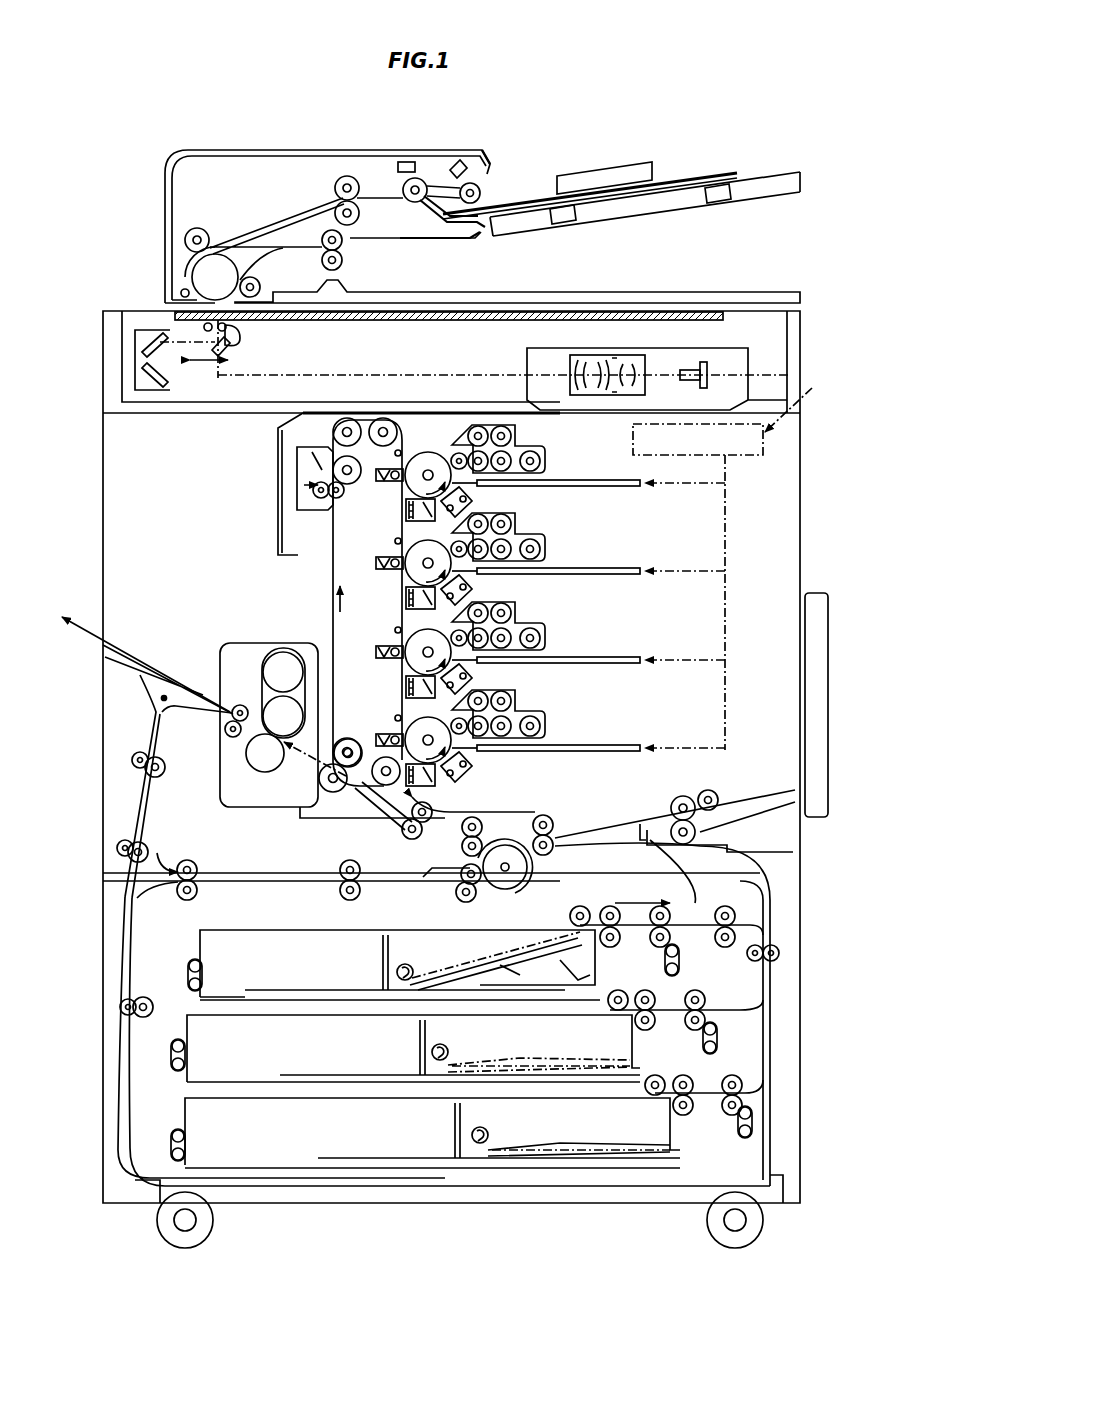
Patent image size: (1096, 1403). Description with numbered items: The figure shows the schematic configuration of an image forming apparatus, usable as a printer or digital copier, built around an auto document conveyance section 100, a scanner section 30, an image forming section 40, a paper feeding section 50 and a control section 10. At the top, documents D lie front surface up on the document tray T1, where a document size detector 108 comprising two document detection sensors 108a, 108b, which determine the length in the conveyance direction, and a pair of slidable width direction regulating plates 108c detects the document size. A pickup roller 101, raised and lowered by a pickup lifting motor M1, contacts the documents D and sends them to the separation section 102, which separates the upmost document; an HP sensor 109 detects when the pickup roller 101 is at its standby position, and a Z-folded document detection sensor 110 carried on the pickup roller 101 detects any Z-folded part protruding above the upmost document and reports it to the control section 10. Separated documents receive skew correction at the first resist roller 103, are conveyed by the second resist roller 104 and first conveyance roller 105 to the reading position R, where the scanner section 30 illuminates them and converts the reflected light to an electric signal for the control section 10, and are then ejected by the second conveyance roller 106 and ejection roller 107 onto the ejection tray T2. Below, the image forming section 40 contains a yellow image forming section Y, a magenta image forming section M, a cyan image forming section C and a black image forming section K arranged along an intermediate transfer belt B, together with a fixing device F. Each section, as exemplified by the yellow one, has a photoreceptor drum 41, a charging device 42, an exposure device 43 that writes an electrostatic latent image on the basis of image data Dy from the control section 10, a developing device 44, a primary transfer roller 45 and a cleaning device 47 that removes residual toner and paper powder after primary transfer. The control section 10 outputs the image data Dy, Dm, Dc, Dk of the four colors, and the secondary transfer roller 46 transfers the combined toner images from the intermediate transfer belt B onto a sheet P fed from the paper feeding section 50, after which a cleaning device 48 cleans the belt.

The auto document conveyance section 100 is at (313, 126).
The pickup roller 101 is at (484, 196).
The separation section 102 is at (437, 216).
The first resist roller 103 is at (335, 187).
The second resist roller 104 is at (204, 232).
The first conveyance roller 105 is at (181, 292).
The second conveyance roller 106 is at (259, 284).
The ejection roller 107 is at (345, 258).
The document size detector 108 is at (658, 146).
The document detection sensor 108a is at (558, 226).
The document detection sensor 108b is at (720, 205).
The width direction regulating plates 108c is at (615, 175).
The HP sensor 109 is at (458, 160).
The Z-folded document detection sensor 110 is at (488, 164).
The pickup lifting motor M1 is at (406, 160).
The documents D is at (718, 170).
The document tray T1 is at (663, 216).
The ejection tray T2 is at (612, 288).
The reading position R is at (211, 273).
The scanner section 30 is at (803, 350).
The control section 10 is at (744, 560).
The image forming section 40 is at (803, 566).
The photoreceptor drum 41 is at (399, 437).
The charging device 42 is at (496, 503).
The exposure device 43 is at (546, 467).
The developing device 44 is at (498, 424).
The primary transfer roller 45 is at (370, 488).
The secondary transfer roller 46 is at (330, 794).
The cleaning device 47 is at (395, 528).
The cleaning device 48 is at (300, 475).
The intermediate transfer belt B is at (332, 598).
The fixing device F is at (255, 645).
The sheet P is at (590, 942).
The paper feeding section 50 is at (803, 920).
The yellow image forming section Y is at (555, 433).
The magenta image forming section M is at (586, 523).
The cyan image forming section C is at (586, 611).
The black image forming section K is at (590, 702).
The image data (yellow) Dy is at (685, 507).
The image data (magenta) Dm is at (690, 596).
The image data (cyan) Dc is at (690, 685).
The image data (black) Dk is at (687, 773).